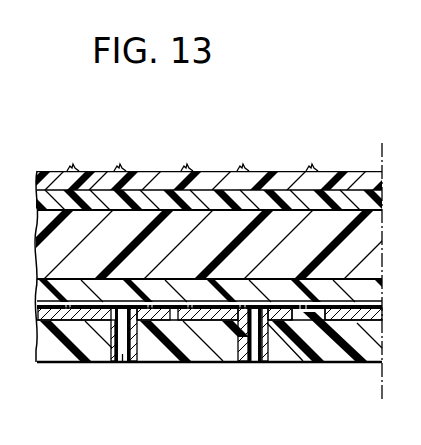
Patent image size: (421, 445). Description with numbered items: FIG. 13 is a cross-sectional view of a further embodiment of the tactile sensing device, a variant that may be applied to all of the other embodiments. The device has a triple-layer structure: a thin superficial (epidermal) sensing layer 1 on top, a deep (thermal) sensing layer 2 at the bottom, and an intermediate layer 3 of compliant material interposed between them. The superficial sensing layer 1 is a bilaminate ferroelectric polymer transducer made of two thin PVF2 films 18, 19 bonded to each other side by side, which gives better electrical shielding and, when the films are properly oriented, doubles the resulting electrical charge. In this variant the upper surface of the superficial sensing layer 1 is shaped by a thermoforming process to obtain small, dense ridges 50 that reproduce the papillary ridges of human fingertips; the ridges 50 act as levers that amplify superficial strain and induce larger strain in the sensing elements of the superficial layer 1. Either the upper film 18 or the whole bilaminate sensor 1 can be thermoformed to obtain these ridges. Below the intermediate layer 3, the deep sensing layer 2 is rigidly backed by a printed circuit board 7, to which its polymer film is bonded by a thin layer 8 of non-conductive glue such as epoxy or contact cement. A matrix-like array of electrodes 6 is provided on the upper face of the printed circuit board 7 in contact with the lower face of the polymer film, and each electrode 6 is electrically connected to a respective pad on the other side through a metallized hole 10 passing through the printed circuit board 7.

The superficial sensing layer 1 is at (391, 180).
The deep sensing layer 2 is at (229, 291).
The intermediate layer 3 is at (210, 244).
The electrodes 6 is at (85, 314).
The printed circuit board 7 is at (293, 330).
The layer of non-conductive glue 8 is at (287, 338).
The metallized hole 10 is at (122, 355).
The upper PVF2 film 18 is at (211, 180).
The lower PVF2 film 19 is at (214, 200).
The ridges 50 is at (120, 167).